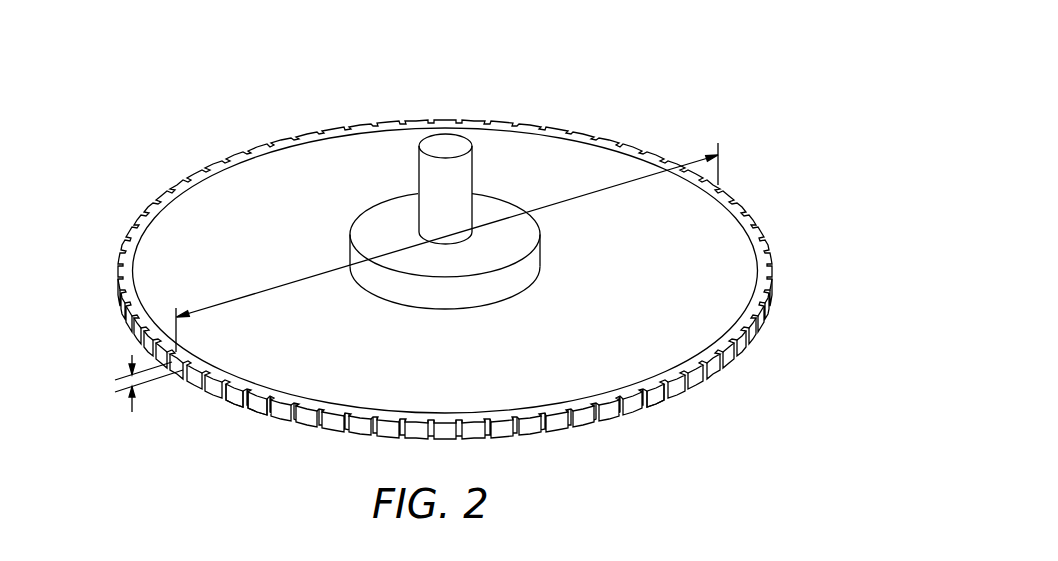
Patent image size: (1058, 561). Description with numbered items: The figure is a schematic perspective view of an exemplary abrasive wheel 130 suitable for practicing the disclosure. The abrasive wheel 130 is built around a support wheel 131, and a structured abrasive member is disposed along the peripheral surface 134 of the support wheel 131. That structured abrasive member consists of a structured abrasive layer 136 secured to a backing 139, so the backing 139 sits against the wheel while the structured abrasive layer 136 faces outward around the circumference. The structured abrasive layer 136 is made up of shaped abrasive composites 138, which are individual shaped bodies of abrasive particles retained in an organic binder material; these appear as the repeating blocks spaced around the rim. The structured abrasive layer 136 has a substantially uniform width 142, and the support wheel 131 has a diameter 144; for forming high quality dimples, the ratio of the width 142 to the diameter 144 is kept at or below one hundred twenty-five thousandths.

The abrasive wheel 130 is at (652, 82).
The support wheel 131 is at (315, 160).
The peripheral surface 134 is at (657, 380).
The structured abrasive layer 136 is at (213, 165).
The shaped abrasive composites 138 is at (252, 403).
The backing 139 is at (388, 128).
The width 142 is at (147, 398).
The diameter 144 is at (265, 290).